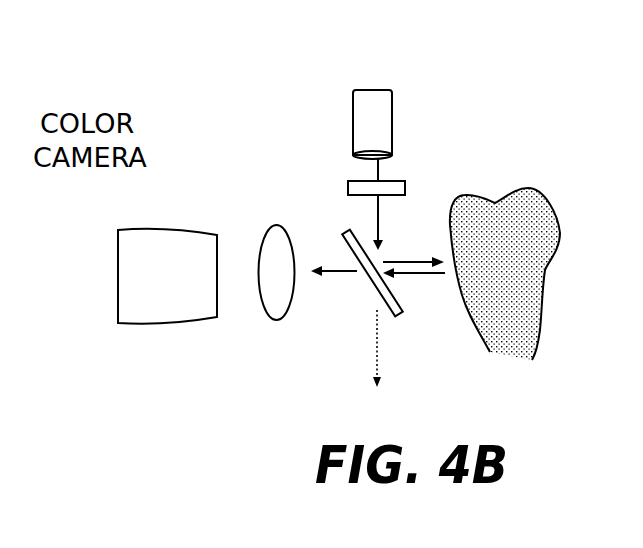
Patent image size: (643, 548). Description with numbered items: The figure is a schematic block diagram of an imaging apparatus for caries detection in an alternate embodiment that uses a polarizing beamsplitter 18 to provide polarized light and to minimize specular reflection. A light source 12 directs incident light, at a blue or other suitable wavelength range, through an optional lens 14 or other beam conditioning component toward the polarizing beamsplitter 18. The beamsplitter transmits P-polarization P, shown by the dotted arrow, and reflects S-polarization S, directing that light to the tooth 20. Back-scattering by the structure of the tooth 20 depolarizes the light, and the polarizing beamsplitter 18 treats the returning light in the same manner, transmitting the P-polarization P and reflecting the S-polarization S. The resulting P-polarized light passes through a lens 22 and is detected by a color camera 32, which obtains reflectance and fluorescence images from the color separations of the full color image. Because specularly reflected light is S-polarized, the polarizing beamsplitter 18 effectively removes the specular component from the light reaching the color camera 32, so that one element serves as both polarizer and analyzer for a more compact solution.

The light source 12 is at (370, 90).
The lens 14 is at (405, 183).
The polarizing beamsplitter 18 is at (401, 316).
The tooth 20 is at (553, 228).
The lens 22 is at (277, 223).
The color camera 32 is at (133, 232).
The S-polarization S is at (404, 258).
The P-polarization P is at (370, 352).